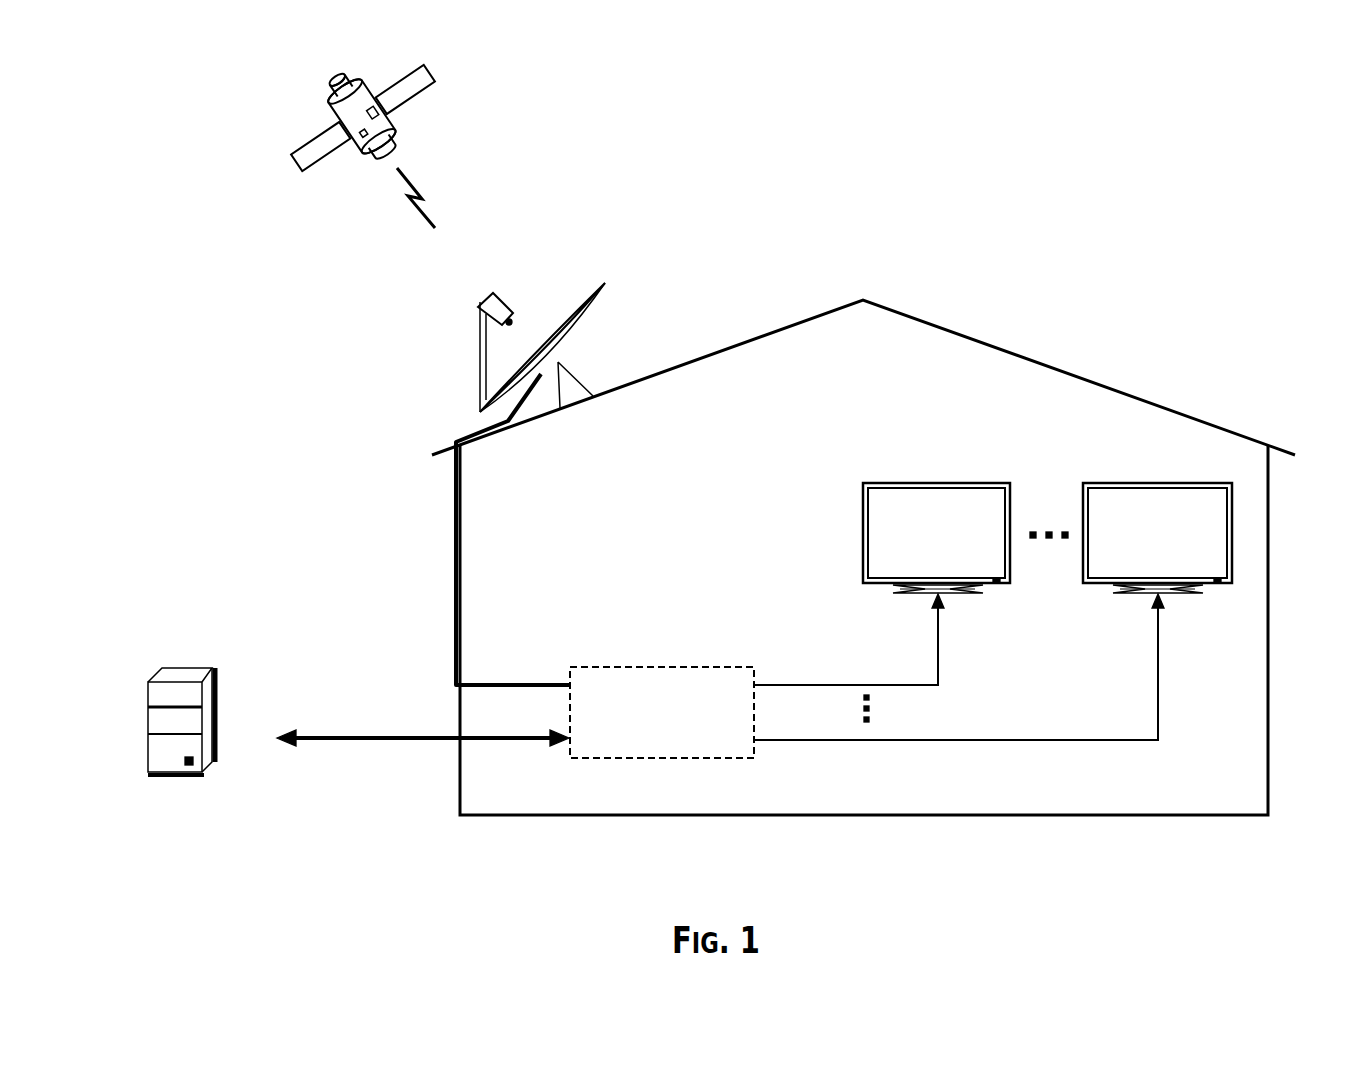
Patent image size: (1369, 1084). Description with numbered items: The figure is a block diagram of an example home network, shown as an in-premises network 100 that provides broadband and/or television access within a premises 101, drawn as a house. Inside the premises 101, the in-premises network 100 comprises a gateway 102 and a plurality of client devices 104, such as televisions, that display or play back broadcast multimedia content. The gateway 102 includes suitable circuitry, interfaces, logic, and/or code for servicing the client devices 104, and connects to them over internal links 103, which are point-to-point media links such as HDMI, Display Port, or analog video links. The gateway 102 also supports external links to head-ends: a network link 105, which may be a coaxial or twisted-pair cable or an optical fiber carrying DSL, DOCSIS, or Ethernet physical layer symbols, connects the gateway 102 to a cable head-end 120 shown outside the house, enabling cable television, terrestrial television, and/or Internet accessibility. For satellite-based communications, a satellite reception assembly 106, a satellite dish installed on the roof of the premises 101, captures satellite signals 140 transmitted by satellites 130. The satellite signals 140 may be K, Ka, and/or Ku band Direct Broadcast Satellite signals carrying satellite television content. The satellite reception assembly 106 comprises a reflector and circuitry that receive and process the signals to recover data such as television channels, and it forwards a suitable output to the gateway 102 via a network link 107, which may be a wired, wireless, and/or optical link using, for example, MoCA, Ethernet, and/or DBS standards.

The in-premises network 100 is at (992, 317).
The premises 101 is at (1133, 398).
The gateway 102 is at (662, 712).
The links 103 is at (938, 635).
The client devices 104 is at (1047, 538).
The network link 105 is at (497, 742).
The satellite reception assembly 106 is at (588, 326).
The network link 107 is at (454, 555).
The cable head-end 120 is at (148, 728).
The satellites 130 is at (333, 115).
The satellite signals 140 is at (492, 202).